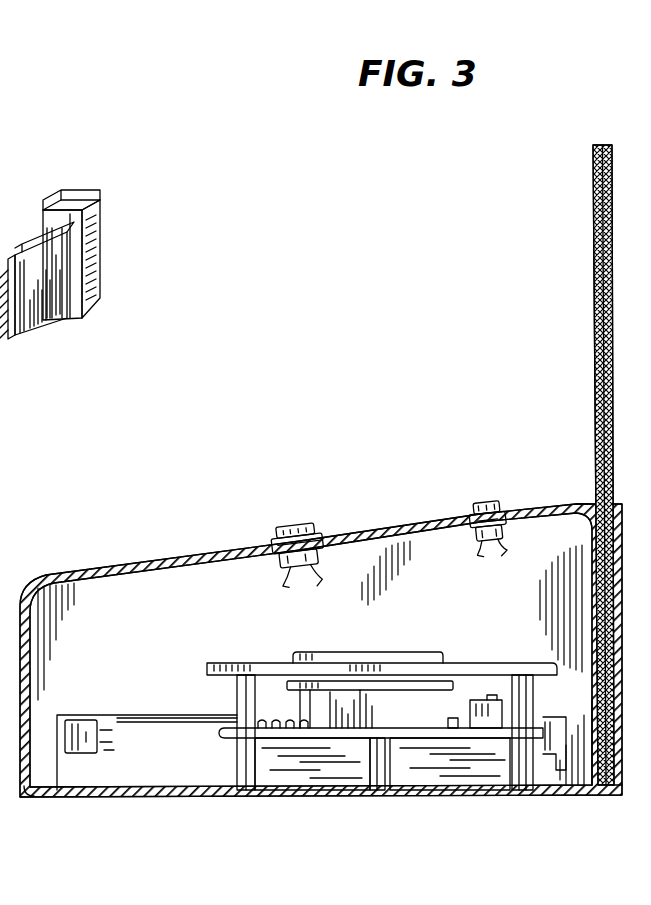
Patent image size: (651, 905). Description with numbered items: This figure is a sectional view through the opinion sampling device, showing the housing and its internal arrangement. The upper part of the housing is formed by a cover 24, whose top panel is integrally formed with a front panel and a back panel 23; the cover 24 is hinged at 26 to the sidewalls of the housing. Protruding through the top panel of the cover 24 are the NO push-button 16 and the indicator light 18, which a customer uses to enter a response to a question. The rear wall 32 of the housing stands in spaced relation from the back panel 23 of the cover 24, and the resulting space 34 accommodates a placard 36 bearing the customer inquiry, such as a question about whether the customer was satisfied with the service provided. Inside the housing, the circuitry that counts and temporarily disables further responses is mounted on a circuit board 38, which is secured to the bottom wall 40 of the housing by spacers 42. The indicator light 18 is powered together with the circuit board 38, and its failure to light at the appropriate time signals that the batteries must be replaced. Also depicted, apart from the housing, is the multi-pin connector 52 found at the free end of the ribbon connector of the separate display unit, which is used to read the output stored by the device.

The push-button 16 is at (291, 524).
The indicator light 18 is at (486, 502).
The back panel 23 is at (594, 773).
The cover 24 is at (150, 562).
The hinge 26 is at (28, 797).
The rear wall 32 is at (622, 760).
The space 34 is at (594, 515).
The placard 36 is at (608, 156).
The circuit board 38 is at (220, 735).
The bottom wall 40 is at (392, 797).
The spacers 42 is at (228, 700).
The multi-pin connector 52 is at (76, 196).